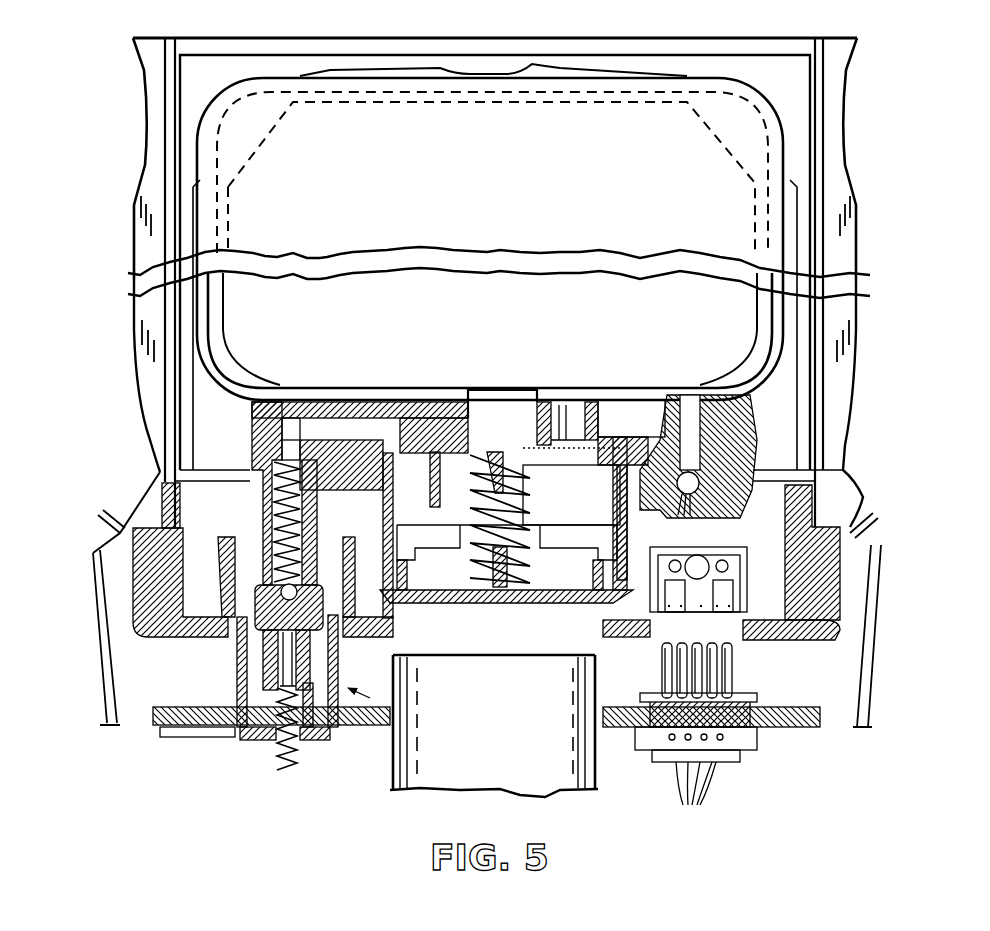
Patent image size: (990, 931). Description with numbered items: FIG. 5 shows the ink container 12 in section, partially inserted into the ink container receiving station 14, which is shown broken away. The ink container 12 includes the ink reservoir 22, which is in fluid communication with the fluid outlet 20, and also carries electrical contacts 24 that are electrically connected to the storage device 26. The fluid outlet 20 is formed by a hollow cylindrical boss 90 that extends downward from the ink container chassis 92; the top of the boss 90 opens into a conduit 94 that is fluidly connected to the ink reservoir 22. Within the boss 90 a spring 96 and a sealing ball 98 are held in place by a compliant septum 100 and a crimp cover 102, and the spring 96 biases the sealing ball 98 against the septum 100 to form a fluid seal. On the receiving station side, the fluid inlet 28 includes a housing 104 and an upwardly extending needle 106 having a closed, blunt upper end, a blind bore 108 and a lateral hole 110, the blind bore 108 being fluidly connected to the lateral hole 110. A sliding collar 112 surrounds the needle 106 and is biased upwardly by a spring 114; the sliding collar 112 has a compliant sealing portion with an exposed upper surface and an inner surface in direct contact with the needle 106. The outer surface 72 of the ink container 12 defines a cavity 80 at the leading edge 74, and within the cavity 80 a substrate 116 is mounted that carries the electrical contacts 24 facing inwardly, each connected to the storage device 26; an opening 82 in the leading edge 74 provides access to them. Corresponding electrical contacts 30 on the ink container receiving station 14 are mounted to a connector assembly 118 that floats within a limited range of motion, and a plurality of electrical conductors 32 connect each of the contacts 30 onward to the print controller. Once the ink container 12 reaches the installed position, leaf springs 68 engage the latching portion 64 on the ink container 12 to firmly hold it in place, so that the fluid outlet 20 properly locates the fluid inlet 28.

The ink container 12 is at (875, 217).
The ink container receiving station 14 is at (770, 733).
The fluid outlet 20 is at (183, 634).
The ink reservoir 22 is at (503, 307).
The electrical contacts 24 is at (733, 598).
The storage device 26 is at (707, 553).
The fluid inlet 28 is at (343, 728).
The electrical contacts 30 is at (662, 680).
The electrical conductors 32 is at (706, 766).
The latching portion 64 is at (118, 492).
The leaf springs 68 is at (100, 540).
The outer surface 72 is at (800, 648).
The leading edge 74 is at (766, 641).
The cavity 80 is at (702, 494).
The opening 82 is at (665, 650).
The hollow cylindrical boss 90 is at (262, 506).
The ink container chassis 92 is at (215, 440).
The conduit 94 is at (317, 432).
The spring 96 is at (317, 512).
The sealing ball 98 is at (318, 590).
The compliant septum 100 is at (240, 659).
The crimp cover 102 is at (258, 600).
The housing 104 is at (340, 672).
The needle 106 is at (237, 733).
The blind bore 108 is at (262, 743).
The lateral hole 110 is at (254, 672).
The sliding collar 112 is at (333, 742).
The spring 114 is at (273, 775).
The substrate 116 is at (750, 604).
The connector assembly 118 is at (735, 680).